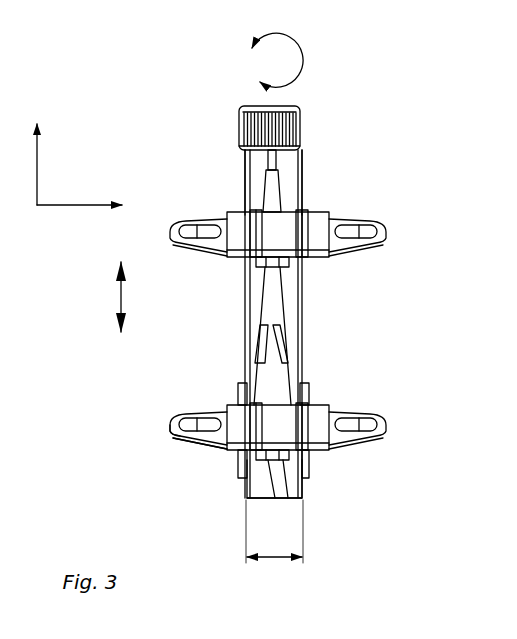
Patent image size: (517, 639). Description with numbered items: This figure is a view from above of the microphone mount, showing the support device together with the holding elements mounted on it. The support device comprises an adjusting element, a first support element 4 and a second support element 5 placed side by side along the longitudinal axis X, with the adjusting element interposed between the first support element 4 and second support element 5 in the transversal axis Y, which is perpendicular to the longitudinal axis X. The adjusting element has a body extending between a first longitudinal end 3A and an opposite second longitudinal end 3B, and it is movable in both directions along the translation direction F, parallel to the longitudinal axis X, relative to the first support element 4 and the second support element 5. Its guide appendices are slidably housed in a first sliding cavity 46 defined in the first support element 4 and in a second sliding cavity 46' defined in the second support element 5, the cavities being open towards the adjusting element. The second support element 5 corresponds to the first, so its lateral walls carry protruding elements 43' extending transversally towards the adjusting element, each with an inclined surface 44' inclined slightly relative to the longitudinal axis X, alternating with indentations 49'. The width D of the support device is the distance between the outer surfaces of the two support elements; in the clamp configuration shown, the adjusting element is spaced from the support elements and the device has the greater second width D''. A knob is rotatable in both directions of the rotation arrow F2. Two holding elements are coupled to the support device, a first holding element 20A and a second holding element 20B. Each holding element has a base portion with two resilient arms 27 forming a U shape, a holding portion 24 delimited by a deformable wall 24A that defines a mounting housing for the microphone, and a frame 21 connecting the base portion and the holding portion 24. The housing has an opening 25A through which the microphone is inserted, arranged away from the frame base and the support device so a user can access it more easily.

The first longitudinal end 3A is at (312, 161).
The second longitudinal end 3B is at (276, 500).
The first support element 4 is at (285, 163).
The second support element 5 is at (257, 163).
The first holding element 20A is at (402, 205).
The second holding element 20B is at (412, 412).
The frame 21 is at (207, 463).
The holding portion 24 is at (328, 211).
The deformable wall 24A is at (229, 211).
The opening 25A is at (281, 420).
The arms 27 is at (150, 421).
The protruding element 43' is at (232, 288).
The inclined surface 44' is at (222, 332).
The first sliding cavity 46 is at (317, 333).
The second sliding cavity 46' is at (211, 349).
The indentation 49' is at (222, 388).
The width of the support device D is at (236, 535).
The second width D'' is at (277, 583).
The translation direction F is at (121, 298).
The rotation arrow F2 is at (298, 50).
The longitudinal axis X is at (38, 150).
The transversal axis Y is at (82, 208).